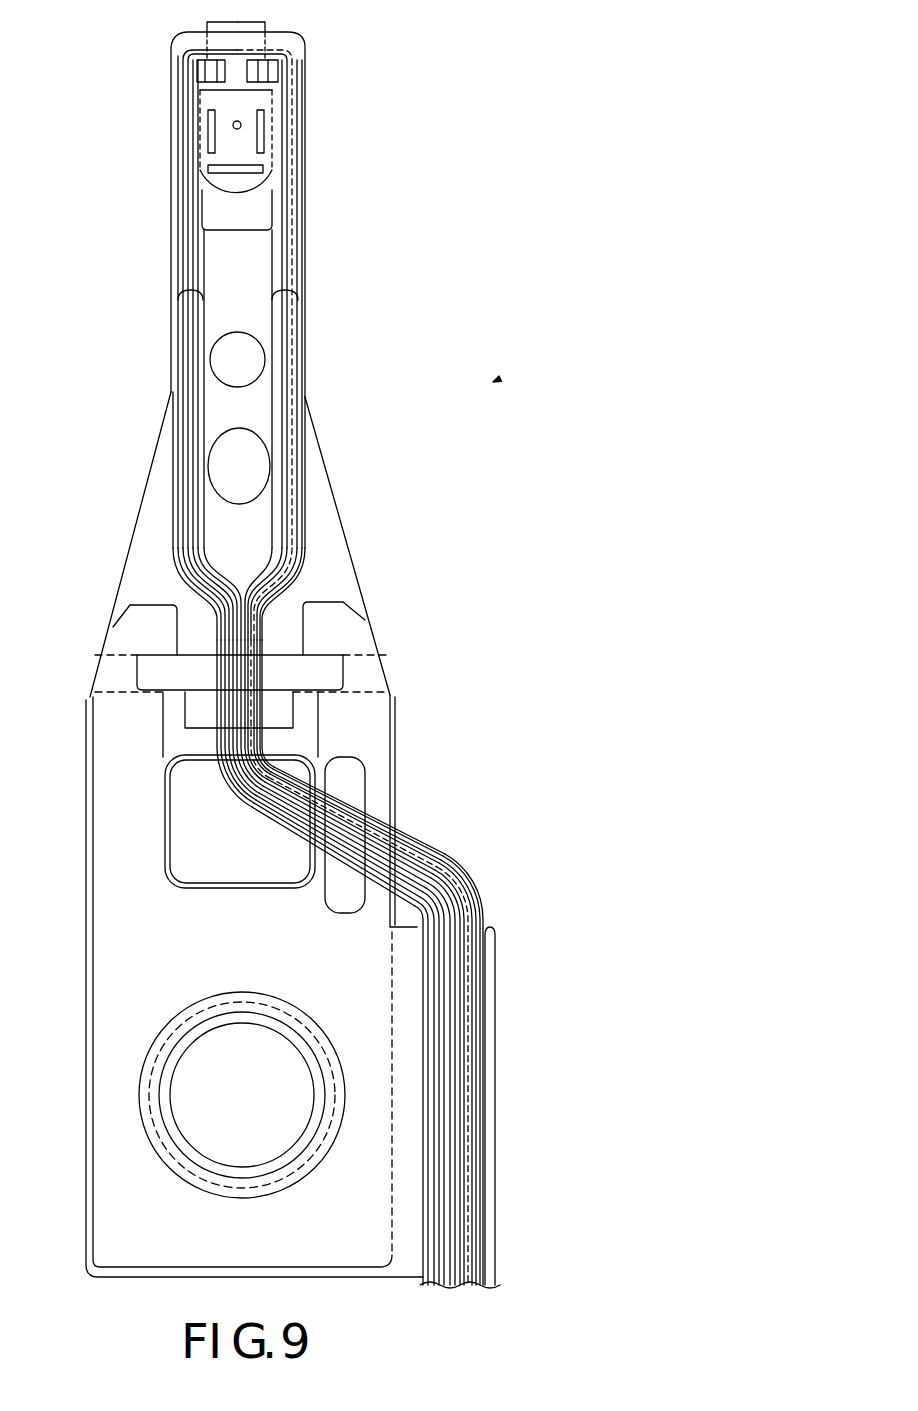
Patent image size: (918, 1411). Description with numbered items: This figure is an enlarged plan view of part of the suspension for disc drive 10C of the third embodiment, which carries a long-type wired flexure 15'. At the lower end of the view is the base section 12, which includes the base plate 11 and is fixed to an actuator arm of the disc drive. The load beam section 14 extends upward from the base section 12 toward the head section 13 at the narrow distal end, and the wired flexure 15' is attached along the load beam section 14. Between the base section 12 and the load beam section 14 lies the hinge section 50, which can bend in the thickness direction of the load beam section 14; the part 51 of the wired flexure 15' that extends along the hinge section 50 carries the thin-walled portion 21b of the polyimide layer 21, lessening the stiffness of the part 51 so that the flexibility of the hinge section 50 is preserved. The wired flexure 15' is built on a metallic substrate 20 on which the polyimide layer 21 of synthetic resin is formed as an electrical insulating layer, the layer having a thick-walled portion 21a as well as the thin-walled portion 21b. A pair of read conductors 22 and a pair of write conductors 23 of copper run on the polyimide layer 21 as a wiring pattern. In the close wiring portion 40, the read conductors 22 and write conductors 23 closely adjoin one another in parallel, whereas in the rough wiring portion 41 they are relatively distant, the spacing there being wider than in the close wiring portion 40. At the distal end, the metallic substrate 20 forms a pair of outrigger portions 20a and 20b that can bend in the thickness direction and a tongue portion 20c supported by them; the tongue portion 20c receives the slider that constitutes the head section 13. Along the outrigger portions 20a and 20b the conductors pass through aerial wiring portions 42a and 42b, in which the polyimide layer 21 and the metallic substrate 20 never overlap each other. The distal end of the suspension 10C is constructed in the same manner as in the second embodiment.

The suspension for disc drive 10C is at (493, 382).
The base plate 11 is at (86, 1103).
The base section 12 is at (105, 992).
The head section 13 is at (213, 187).
The load beam section 14 is at (145, 562).
The wired flexure 15' is at (506, 1066).
The metallic substrate 20 is at (215, 305).
The outrigger portion 20a is at (172, 110).
The outrigger portion 20b is at (305, 125).
The tongue portion 20c is at (252, 182).
The polyimide layer 21 is at (240, 582).
The thick-walled portion 21a is at (291, 97).
The thin-walled portion 21b is at (240, 655).
The read conductors 22 is at (190, 406).
The write conductors 23 is at (292, 390).
The close wiring portion 40 is at (427, 842).
The rough wiring portion 41 is at (305, 517).
The aerial wiring portion 42a is at (183, 148).
The aerial wiring portion 42b is at (295, 165).
The hinge section 50 is at (112, 670).
The part corresponding to the hinge section 51 is at (290, 667).